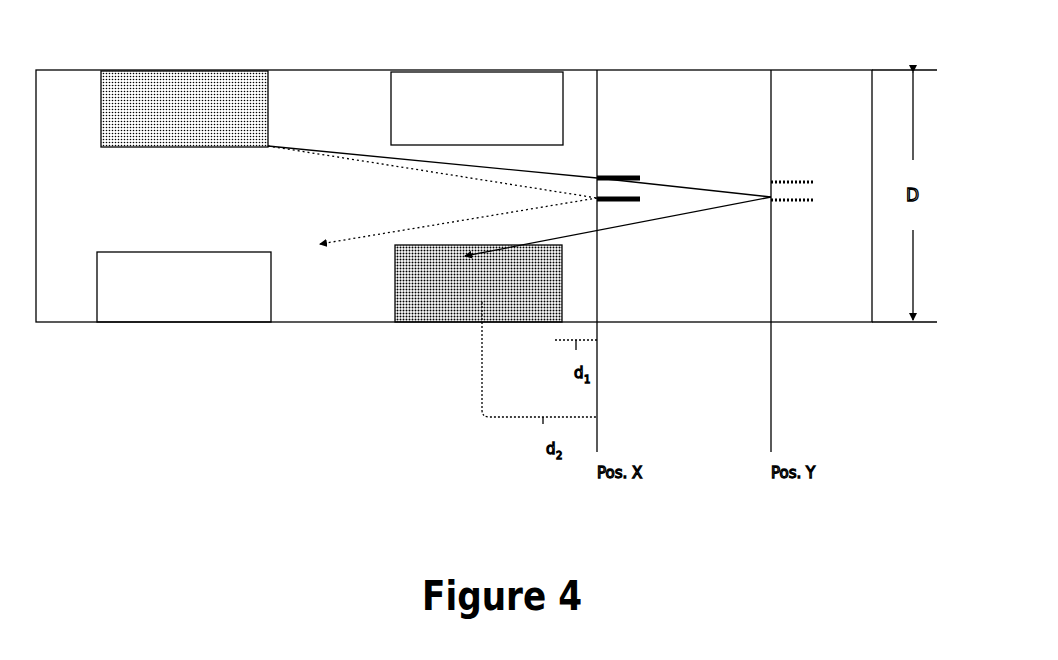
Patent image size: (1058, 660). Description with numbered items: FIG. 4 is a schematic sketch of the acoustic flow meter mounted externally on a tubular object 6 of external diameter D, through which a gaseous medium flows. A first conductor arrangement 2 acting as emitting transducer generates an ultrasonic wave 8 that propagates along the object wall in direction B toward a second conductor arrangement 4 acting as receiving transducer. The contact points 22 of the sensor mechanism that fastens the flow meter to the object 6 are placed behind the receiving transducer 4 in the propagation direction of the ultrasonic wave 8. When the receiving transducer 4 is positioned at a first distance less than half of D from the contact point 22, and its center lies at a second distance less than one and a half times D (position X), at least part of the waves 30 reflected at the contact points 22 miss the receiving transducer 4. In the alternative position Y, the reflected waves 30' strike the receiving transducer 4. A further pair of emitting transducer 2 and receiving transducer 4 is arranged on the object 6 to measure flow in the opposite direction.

The first conductor arrangement 2 is at (508, 110).
The second conductor arrangement 4 is at (225, 300).
The tubular object 6 is at (110, 330).
The ultrasonic wave 8 is at (357, 158).
The contact points 22 is at (625, 175).
The reflected waves 30 is at (458, 213).
The reflected waves 30' is at (618, 220).